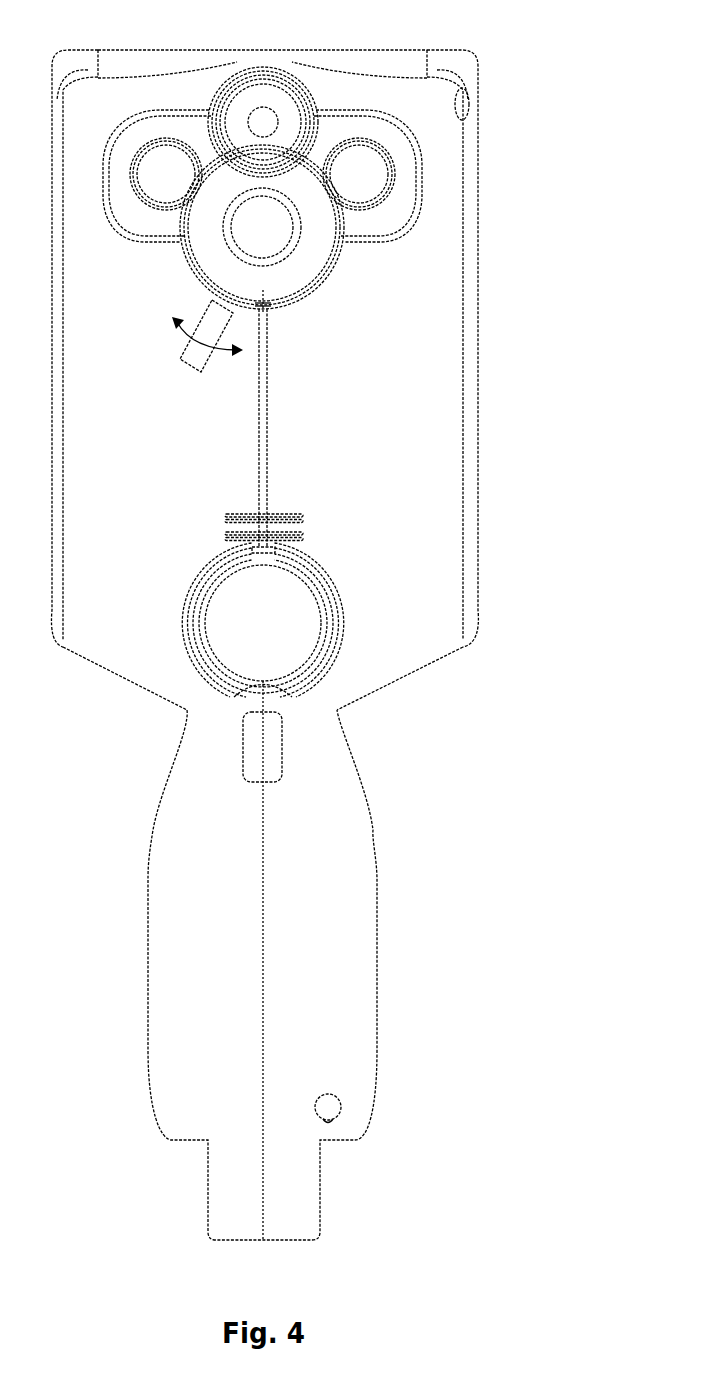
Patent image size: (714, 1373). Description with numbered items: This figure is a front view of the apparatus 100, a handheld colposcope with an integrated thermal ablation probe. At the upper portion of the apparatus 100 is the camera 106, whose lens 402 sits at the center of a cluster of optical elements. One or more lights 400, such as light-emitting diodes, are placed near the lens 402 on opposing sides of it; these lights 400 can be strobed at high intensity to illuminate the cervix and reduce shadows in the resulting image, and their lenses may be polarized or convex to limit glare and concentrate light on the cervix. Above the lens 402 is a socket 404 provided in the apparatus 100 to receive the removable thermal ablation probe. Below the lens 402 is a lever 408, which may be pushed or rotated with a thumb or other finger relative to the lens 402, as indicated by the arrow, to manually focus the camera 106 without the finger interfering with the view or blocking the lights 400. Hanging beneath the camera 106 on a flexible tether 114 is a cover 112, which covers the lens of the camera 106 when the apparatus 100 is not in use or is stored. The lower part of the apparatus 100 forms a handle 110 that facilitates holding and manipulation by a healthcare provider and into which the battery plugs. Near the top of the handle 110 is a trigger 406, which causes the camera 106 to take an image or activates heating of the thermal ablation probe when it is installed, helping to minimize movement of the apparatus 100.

The apparatus 100 is at (547, 54).
The camera 106 is at (293, 272).
The handle 110 is at (327, 927).
The cover 112 is at (280, 635).
The flexible tether 114 is at (268, 418).
The lights 400 is at (152, 188).
The lens 402 is at (279, 239).
The socket 404 is at (270, 88).
The trigger 406 is at (284, 752).
The lever 408 is at (192, 368).